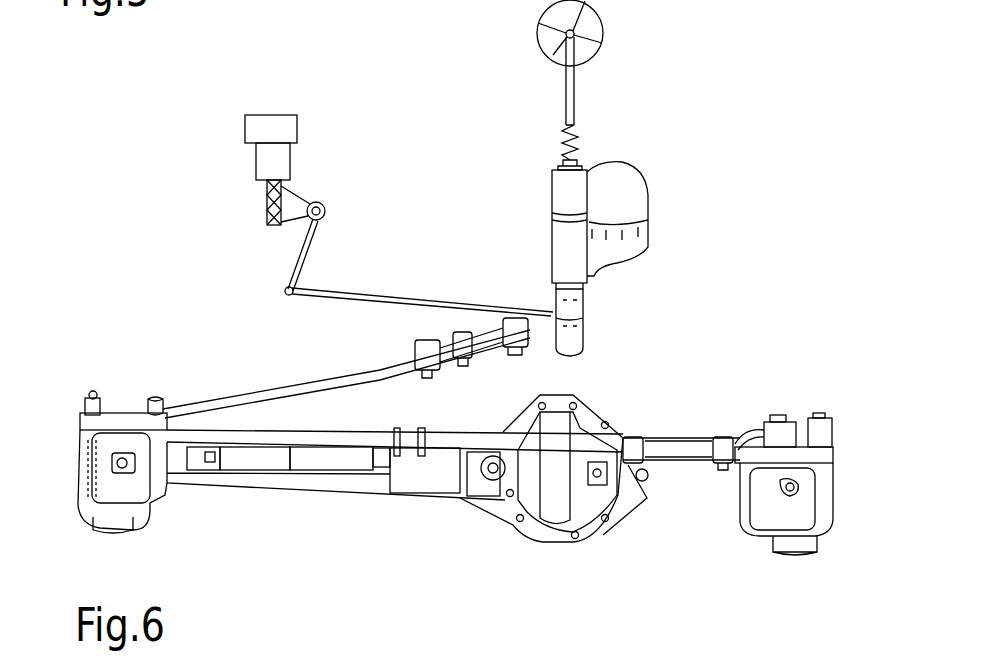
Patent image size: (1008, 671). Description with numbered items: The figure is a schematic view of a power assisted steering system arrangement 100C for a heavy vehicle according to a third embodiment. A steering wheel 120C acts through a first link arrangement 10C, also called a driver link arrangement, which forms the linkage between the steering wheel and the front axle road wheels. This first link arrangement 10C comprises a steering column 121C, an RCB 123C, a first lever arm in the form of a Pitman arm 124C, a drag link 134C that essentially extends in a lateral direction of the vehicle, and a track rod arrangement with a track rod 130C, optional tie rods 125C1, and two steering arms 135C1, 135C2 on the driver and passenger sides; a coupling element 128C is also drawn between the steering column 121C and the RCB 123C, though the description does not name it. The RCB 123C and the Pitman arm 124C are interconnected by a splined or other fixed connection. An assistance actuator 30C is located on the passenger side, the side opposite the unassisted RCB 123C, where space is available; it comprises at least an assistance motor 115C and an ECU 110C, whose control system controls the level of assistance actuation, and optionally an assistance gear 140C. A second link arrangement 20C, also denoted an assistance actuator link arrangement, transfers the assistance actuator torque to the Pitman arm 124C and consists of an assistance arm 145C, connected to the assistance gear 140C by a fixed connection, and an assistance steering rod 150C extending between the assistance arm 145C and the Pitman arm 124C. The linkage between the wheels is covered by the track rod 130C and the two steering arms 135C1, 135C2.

The first link arrangement 10C is at (643, 344).
The second link arrangement 20C is at (233, 268).
The assistance actuator 30C is at (232, 161).
The power assisted steering system arrangement 100C is at (730, 247).
The ECU 110C is at (300, 131).
The assistance motor 115C is at (258, 172).
The steering wheel 120C is at (598, 50).
The steering column 121C is at (575, 98).
The RCB 123C is at (651, 190).
The Pitman arm 124C is at (590, 306).
The tie rod 125C1 is at (757, 458).
The flexible coupling 128C is at (577, 141).
The track rod 130C is at (453, 445).
The drag link 134C is at (223, 400).
The driver side steering arm 135C1 is at (833, 417).
The passenger side steering arm 135C2 is at (100, 395).
The assistance gear 140C is at (301, 196).
The assistance arm 145C is at (309, 243).
The assistance steering rod 150C is at (348, 296).